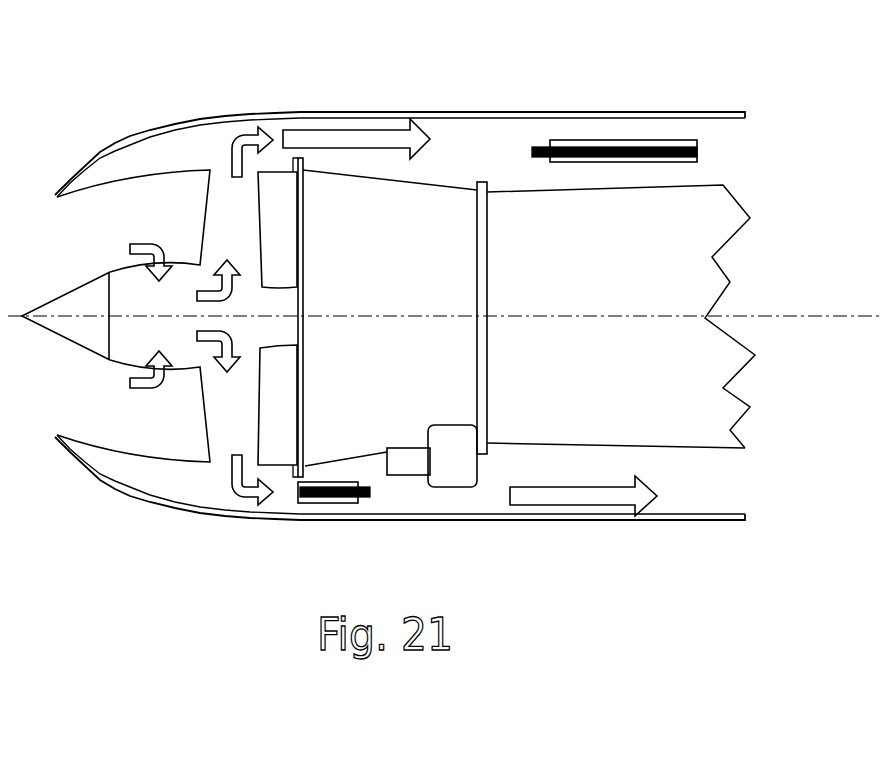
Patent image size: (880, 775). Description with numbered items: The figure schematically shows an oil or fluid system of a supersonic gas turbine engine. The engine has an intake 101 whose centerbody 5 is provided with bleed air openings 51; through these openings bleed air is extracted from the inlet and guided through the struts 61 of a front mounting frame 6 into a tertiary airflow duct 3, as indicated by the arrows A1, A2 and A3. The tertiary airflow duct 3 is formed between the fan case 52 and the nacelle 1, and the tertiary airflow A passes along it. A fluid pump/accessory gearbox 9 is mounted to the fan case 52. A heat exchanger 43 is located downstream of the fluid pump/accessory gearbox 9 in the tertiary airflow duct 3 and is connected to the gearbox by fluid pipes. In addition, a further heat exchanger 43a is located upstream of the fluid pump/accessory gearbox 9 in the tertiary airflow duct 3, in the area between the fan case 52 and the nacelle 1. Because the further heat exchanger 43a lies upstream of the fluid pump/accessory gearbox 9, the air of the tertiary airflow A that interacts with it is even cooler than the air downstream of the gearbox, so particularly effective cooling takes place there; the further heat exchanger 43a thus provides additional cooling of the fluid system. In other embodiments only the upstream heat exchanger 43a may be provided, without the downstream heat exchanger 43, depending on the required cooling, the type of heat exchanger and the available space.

The nacelle 1 is at (600, 111).
The tertiary airflow duct 3 is at (505, 137).
The centerbody 5 is at (125, 270).
The front mounting frame 6 is at (258, 237).
The fluid pump/accessory gearbox 9 is at (458, 488).
The heat exchanger 43 is at (663, 140).
The further heat exchanger 43a is at (330, 507).
The bleed air openings 51 is at (168, 367).
The fan case 52 is at (437, 187).
The struts 61 is at (247, 192).
The intake 101 is at (100, 187).
The tertiary airflow A is at (357, 130).
The bleed air flow arrow A1 is at (127, 387).
The bleed air flow arrow A2 is at (222, 306).
The bleed air flow arrow A3 is at (245, 142).